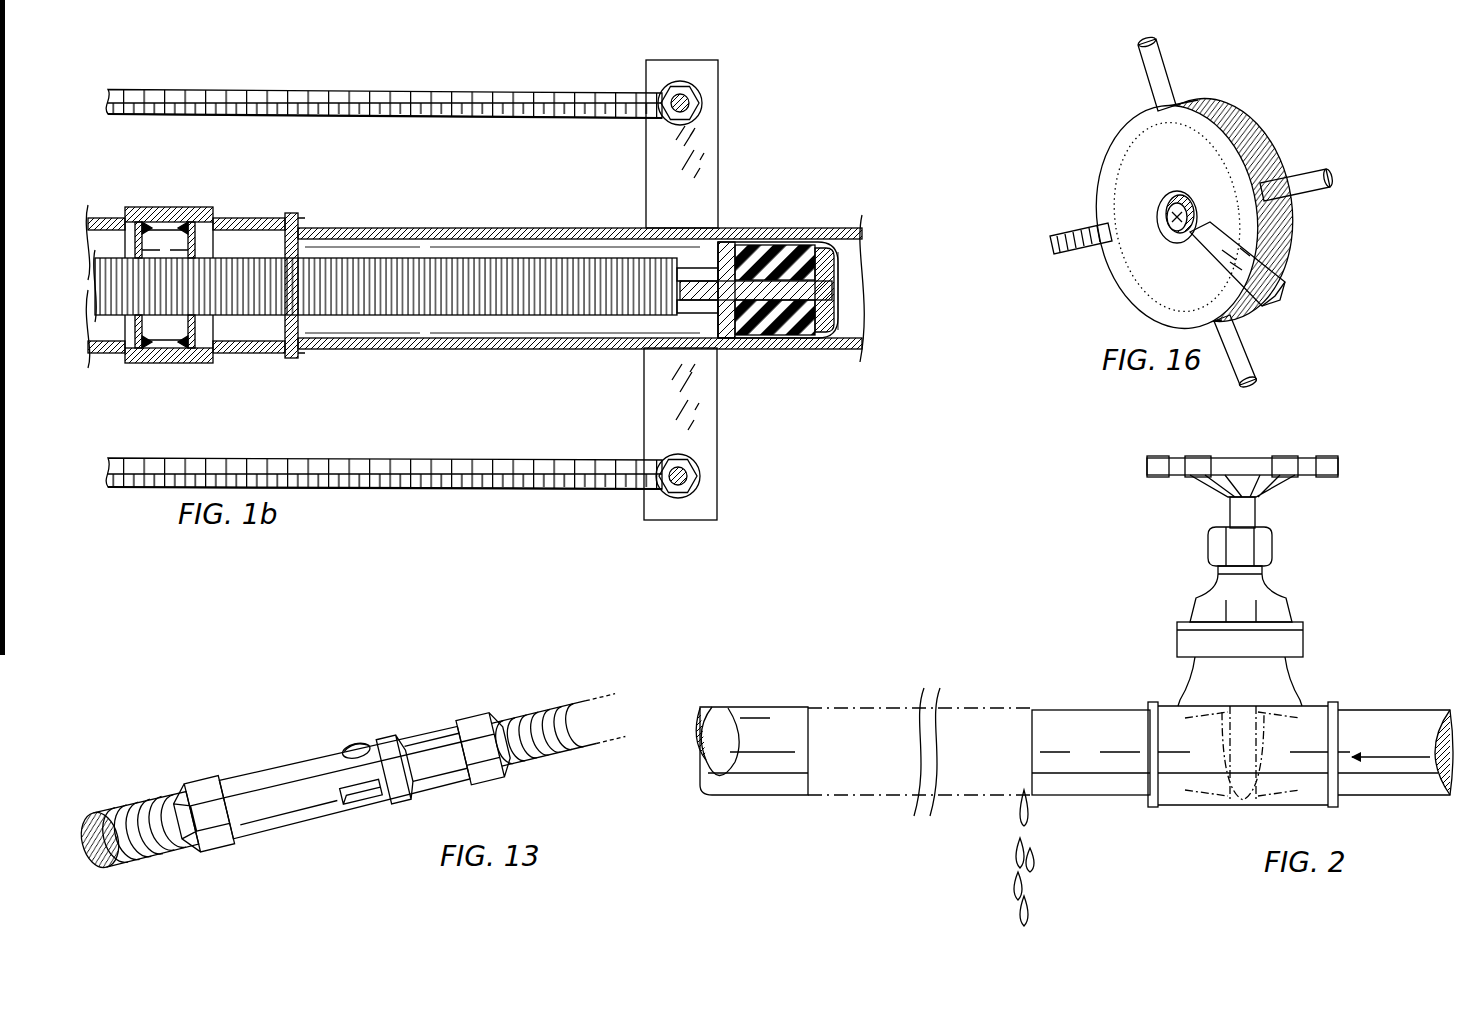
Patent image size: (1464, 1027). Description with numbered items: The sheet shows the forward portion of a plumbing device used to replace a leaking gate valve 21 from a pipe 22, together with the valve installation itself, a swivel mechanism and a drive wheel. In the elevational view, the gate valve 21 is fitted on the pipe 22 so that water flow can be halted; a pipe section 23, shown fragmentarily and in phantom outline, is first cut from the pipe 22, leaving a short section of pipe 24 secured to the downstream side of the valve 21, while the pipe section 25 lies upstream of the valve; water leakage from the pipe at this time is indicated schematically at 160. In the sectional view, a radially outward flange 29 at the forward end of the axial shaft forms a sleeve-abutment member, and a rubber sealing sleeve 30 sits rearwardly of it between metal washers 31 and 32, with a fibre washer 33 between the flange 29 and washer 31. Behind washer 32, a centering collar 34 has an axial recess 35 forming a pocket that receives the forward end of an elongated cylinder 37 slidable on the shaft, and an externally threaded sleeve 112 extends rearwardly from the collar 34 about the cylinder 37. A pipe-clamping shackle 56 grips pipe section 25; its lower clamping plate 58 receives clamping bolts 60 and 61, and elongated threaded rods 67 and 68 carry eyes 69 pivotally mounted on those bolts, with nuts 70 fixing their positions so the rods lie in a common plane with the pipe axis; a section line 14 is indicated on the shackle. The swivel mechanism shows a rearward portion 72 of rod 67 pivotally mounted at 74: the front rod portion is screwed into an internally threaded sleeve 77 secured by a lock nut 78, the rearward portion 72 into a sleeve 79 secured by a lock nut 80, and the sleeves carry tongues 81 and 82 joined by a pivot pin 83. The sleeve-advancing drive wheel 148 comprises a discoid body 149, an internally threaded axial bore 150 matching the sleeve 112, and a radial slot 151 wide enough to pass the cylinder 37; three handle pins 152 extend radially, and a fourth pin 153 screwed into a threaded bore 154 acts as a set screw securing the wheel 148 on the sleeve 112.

In FIG. 1B, the section line 14 is at (550, 18).
In FIG. 1B, the gate valve 21 is at (222, 198).
In FIG. 2, the gate valve 21 is at (1305, 555).
In FIG. 2, the pipe 22 is at (786, 702).
In FIG. 2, the cutaway pipe section 23 is at (982, 702).
In FIG. 2, the short section of pipe 24 is at (1084, 704).
In FIG. 1B, the pipe section 25 is at (322, 350).
In FIG. 2, the pipe section 25 is at (1360, 704).
In FIG. 1B, the flange 29 is at (845, 272).
In FIG. 1B, the rubber sealing sleeve 30 is at (784, 346).
In FIG. 1B, the metal washer 31 is at (814, 240).
In FIG. 1B, the metal washer 32 is at (736, 238).
In FIG. 1B, the fibre washer 33 is at (833, 312).
In FIG. 1B, the centering collar 34 is at (726, 340).
In FIG. 1B, the axial recess 35 is at (720, 332).
In FIG. 1B, the elongated cylinder 37 is at (690, 306).
In FIG. 1B, the pipe-clamping shackle 56 is at (738, 426).
In FIG. 1B, the lower clamping plate 58 is at (656, 155).
In FIG. 1B, the clamping bolt 60 is at (690, 486).
In FIG. 1B, the clamping bolt 61 is at (687, 98).
In FIG. 1B, the elongated threaded rod 67 is at (433, 490).
In FIG. 13, the elongated threaded rod 67 is at (546, 712).
In FIG. 1B, the elongated threaded rod 68 is at (372, 92).
In FIG. 1B, the eye 69 is at (672, 84).
In FIG. 1B, the nut 70 is at (700, 103).
In FIG. 1B, the externally threaded sleeve 112 is at (443, 298).
In FIG. 16, the sleeve-advancing drive wheel 148 is at (1207, 213).
In FIG. 16, the discoid body 149 is at (1116, 172).
In FIG. 16, the internally threaded axial bore 150 is at (1196, 248).
In FIG. 16, the radially extending slot 151 is at (1270, 277).
In FIG. 16, the handle pin 152 is at (1164, 74).
In FIG. 16, the pin 153 is at (1078, 262).
In FIG. 16, the threaded bore 154 is at (1186, 203).
In FIG. 13, the rearward portion 72 is at (146, 806).
In FIG. 13, the pivotal mounting 74 is at (350, 762).
In FIG. 13, the internally threaded sleeve 77 is at (440, 776).
In FIG. 13, the lock nut 78 is at (500, 772).
In FIG. 13, the internally threaded sleeve 79 is at (292, 810).
In FIG. 13, the lock nut 80 is at (212, 786).
In FIG. 13, the tongue 81 is at (368, 792).
In FIG. 13, the tongue 82 is at (392, 754).
In FIG. 13, the pivot pin 83 is at (352, 746).
In FIG. 2, the leakage of water 160 is at (1036, 860).